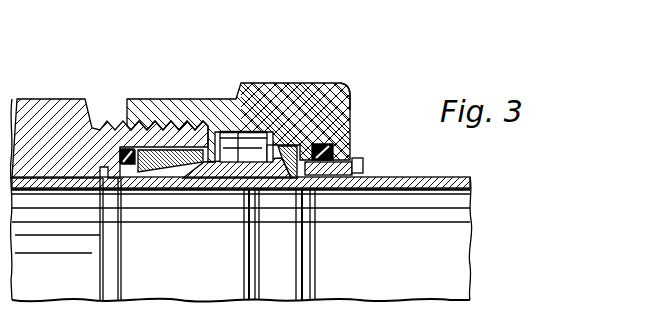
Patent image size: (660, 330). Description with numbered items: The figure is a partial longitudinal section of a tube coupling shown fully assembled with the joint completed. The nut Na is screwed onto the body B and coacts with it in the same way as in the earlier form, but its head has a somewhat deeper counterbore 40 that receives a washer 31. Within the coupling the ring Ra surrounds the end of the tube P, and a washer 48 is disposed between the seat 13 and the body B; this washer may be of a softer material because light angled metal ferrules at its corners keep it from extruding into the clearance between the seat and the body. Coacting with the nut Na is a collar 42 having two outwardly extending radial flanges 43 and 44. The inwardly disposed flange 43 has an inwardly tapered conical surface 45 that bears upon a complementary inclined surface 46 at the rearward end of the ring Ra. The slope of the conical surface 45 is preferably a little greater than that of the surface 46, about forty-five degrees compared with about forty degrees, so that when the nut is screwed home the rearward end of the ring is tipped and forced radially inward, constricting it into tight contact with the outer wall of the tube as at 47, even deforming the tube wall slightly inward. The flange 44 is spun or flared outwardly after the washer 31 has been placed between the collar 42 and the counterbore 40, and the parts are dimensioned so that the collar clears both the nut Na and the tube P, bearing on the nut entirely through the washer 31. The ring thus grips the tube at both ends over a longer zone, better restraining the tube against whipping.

The body B is at (63, 130).
The tube P is at (430, 218).
The seat 13 is at (165, 150).
The washer 48 is at (122, 148).
The inclined surface 46 is at (245, 185).
The tube wall contact 47 is at (255, 189).
The conical surface 45 is at (283, 182).
The nut Na is at (325, 98).
The counterbore 40 is at (347, 103).
The ring Ra is at (242, 131).
The inwardly disposed flange 43 is at (287, 148).
The washer 31 is at (348, 124).
The collar 42 is at (348, 142).
The outwardly flared flange 44 is at (358, 168).